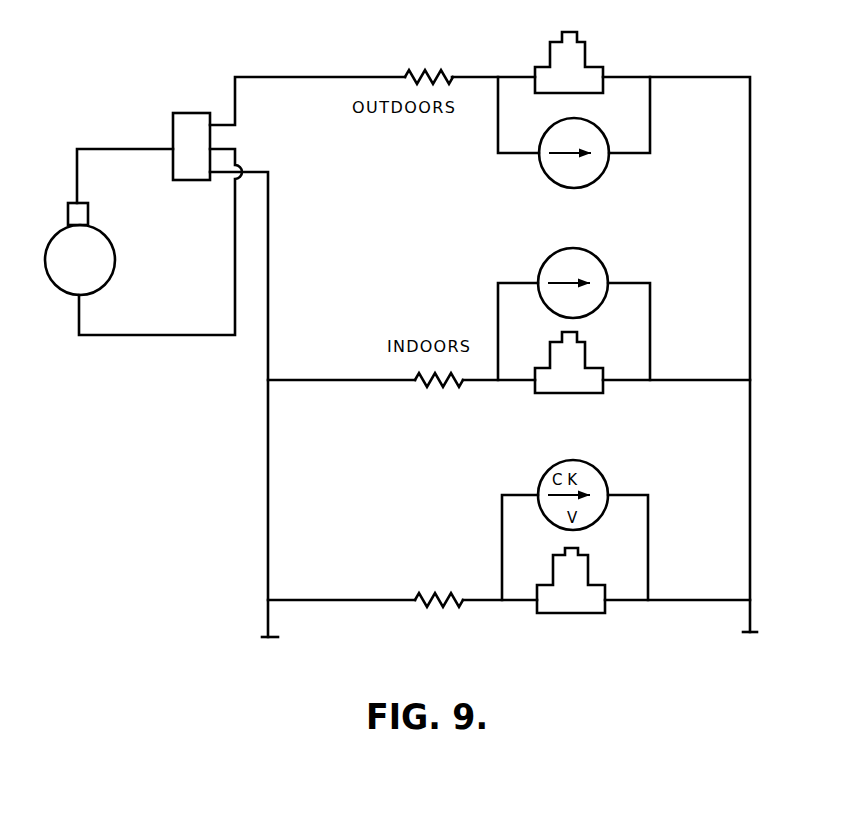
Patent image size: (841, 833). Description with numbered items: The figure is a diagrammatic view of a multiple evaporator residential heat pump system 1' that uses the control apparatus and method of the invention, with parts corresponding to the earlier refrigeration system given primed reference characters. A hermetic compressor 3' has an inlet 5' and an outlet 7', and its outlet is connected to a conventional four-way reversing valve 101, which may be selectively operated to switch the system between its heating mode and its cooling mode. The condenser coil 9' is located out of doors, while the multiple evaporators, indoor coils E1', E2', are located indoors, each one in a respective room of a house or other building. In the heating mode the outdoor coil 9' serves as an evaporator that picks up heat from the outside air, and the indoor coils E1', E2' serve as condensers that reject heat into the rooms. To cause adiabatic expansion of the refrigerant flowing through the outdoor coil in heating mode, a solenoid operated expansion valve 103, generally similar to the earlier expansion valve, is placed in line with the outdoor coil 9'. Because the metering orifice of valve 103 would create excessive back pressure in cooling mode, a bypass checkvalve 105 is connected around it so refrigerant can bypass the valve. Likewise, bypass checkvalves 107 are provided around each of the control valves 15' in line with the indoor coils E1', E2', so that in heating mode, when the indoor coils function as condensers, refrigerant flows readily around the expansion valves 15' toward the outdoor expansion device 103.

The multiple evaporator heat pump system 1' is at (782, 354).
The hermetic compressor 3' is at (68, 284).
The inlet 5' is at (160, 242).
The outlet 7' is at (91, 201).
The condenser coil 9' is at (429, 45).
The four-way reversing valve 101 is at (171, 111).
The solenoid operated valve 103 is at (624, 64).
The bypass checkvalve 105 is at (551, 178).
The bypass checkvalves 107 is at (592, 252).
The control valves 15' is at (584, 466).
The indoor coil E1' is at (414, 398).
The indoor coil E2' is at (422, 621).